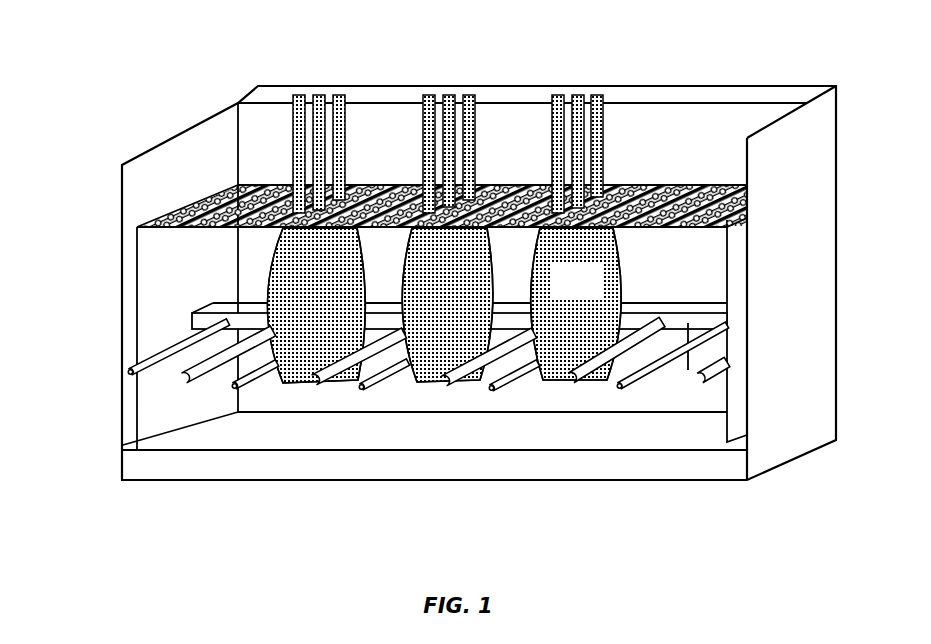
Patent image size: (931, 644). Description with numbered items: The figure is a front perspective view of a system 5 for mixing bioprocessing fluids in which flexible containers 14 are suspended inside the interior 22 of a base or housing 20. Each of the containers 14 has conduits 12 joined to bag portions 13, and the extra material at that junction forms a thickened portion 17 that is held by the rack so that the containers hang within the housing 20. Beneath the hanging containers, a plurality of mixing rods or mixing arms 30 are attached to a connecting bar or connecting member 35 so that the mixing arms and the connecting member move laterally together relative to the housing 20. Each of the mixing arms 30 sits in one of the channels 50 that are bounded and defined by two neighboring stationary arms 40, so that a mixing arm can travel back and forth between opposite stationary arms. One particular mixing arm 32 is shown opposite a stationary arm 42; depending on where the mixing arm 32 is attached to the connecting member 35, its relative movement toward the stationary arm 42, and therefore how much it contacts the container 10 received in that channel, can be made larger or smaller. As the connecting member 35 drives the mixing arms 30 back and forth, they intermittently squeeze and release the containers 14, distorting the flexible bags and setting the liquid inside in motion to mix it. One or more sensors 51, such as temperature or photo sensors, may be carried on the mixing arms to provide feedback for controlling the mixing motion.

The system 5 is at (90, 507).
The container 10 is at (316, 305).
The conduits 12 is at (593, 132).
The bag portions 13 is at (511, 305).
The flexible containers 14 is at (340, 252).
The thickened portion 17 is at (242, 207).
The housing 20 is at (815, 233).
The interior 22 is at (687, 142).
The mixing arms 30 is at (130, 373).
The mixing arm 32 is at (313, 381).
The connecting member 35 is at (213, 307).
The stationary arms 40 is at (358, 385).
The stationary arm 42 is at (190, 381).
The channels 50 is at (468, 388).
The sensors 51 is at (398, 372).